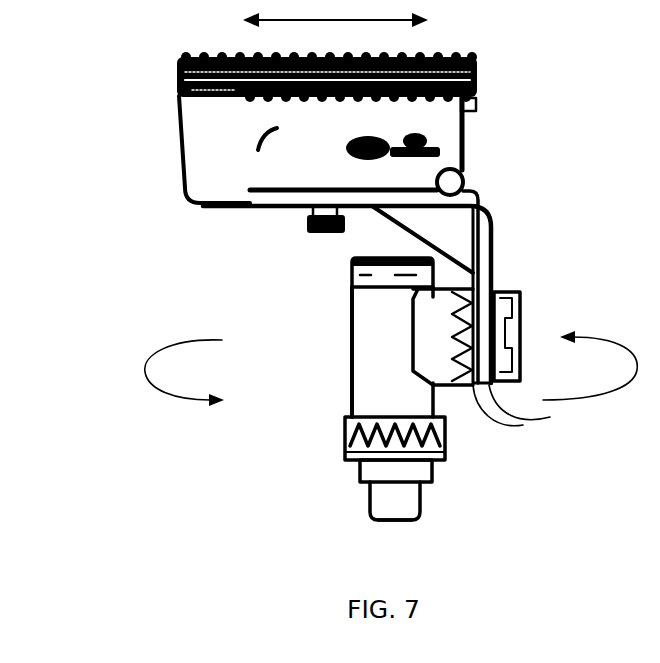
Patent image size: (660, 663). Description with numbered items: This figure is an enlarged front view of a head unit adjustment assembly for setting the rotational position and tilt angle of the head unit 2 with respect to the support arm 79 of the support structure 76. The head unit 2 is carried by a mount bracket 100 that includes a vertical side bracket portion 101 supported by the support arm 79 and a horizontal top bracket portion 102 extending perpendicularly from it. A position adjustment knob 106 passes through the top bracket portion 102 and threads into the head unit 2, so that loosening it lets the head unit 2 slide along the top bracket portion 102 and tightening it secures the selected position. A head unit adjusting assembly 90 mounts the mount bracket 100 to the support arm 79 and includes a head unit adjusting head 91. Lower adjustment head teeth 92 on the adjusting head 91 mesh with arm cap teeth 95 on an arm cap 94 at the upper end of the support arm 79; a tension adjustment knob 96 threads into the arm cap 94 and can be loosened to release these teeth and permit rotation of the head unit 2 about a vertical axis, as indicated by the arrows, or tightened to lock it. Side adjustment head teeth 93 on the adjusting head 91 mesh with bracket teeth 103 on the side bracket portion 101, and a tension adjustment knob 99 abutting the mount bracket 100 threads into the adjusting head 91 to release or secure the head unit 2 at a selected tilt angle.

The head unit 2 is at (172, 142).
The top bracket portion 102 is at (397, 190).
The mount bracket 100 is at (503, 231).
The side bracket portion 101 is at (492, 263).
The tension adjustment knob 99 is at (520, 308).
The position adjustment knob 106 is at (307, 223).
The head unit adjusting assembly 90 is at (379, 424).
The head unit adjusting head 91 is at (370, 372).
The tension adjustment knob 96 is at (353, 273).
The bracket teeth 103 is at (455, 325).
The arm cap teeth 95 is at (397, 422).
The lower adjustment head teeth 92 is at (397, 425).
The arm cap 94 is at (440, 472).
The support arm 79 is at (405, 497).
The support structure 76 is at (349, 525).
The side adjustment head teeth 93 is at (533, 410).